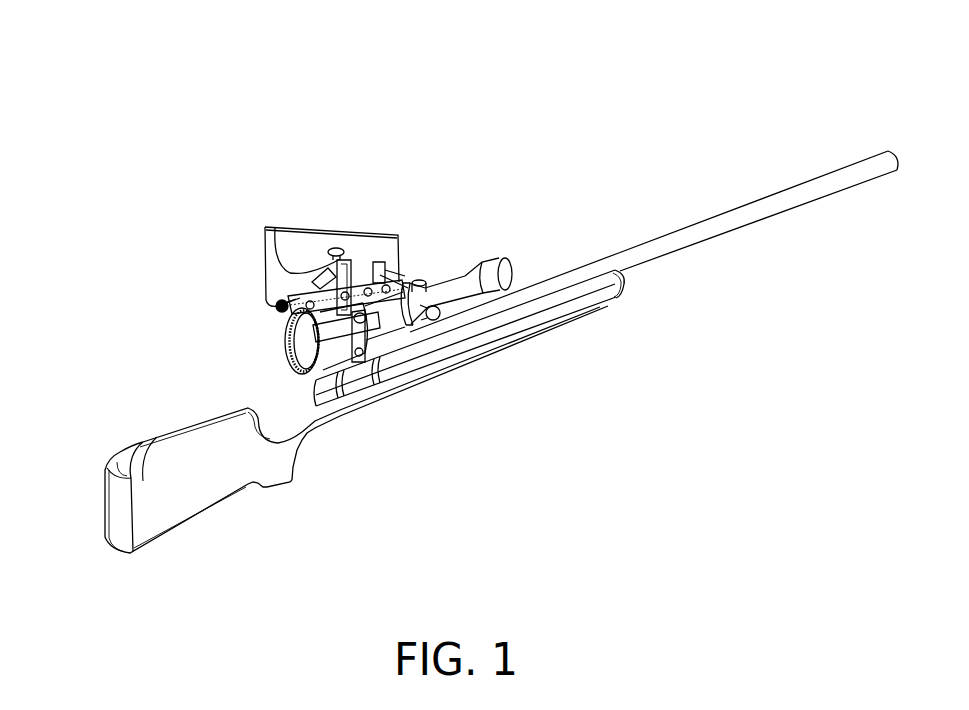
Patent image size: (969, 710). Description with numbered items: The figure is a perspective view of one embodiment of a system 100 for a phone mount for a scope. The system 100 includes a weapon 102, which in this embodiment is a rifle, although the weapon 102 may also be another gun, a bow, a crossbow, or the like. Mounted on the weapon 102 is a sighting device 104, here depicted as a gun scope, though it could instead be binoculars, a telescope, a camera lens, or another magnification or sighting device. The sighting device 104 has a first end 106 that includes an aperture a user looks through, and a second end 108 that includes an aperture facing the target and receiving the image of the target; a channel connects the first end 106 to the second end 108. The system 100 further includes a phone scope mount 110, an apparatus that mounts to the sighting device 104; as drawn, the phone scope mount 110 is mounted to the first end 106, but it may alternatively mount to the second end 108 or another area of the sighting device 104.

The system 100 is at (126, 56).
The weapon 102 is at (583, 273).
The sighting device 104 is at (453, 216).
The first end 106 is at (386, 337).
The second end 108 is at (494, 273).
The phone scope mount 110 is at (228, 260).